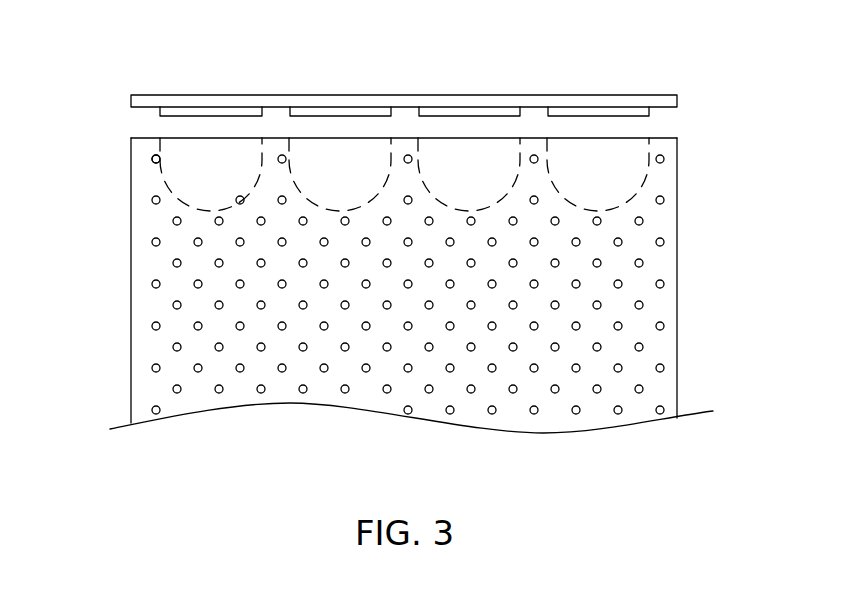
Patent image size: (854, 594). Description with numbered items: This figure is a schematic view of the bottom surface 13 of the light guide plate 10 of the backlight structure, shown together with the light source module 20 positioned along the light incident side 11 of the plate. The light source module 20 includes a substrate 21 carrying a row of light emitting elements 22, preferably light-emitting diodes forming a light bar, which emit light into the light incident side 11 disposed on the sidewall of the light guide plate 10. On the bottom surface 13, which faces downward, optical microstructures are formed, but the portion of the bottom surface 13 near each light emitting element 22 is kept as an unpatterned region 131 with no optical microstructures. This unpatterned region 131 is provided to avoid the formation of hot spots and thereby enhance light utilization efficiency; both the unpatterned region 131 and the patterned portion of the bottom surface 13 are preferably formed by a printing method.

The light guide plate 10 is at (655, 345).
The light incident side 11 is at (663, 137).
The bottom surface 13 is at (660, 236).
The unpatterned region 131 is at (185, 162).
The light source module 20 is at (448, 73).
The substrate 21 is at (640, 95).
The light emitting element 22 is at (643, 112).